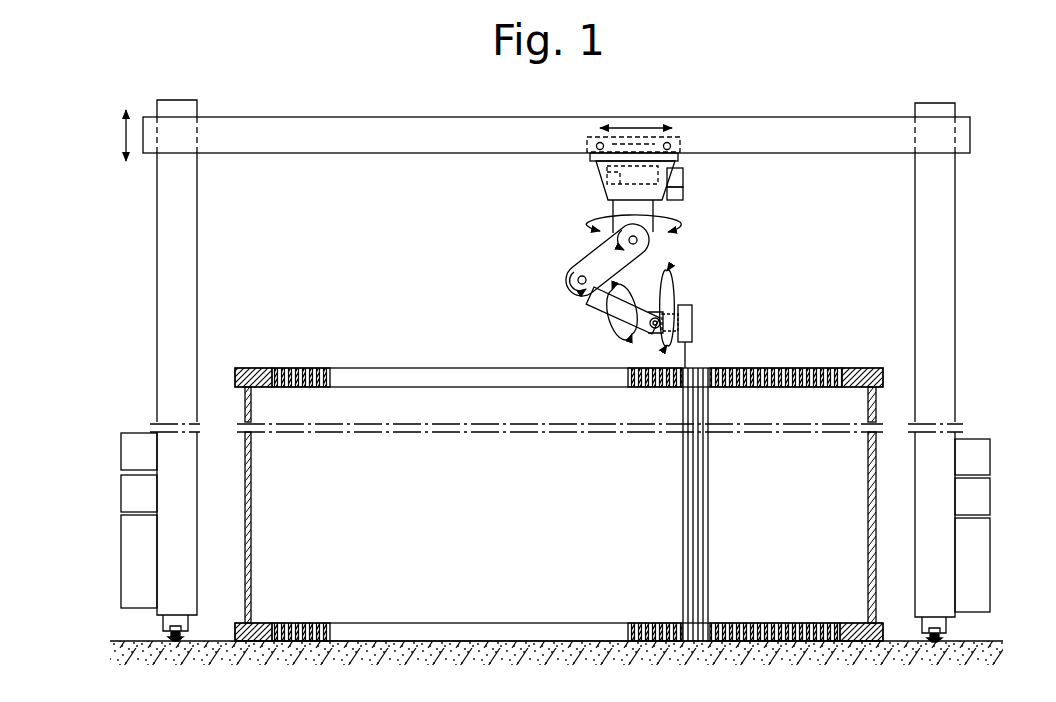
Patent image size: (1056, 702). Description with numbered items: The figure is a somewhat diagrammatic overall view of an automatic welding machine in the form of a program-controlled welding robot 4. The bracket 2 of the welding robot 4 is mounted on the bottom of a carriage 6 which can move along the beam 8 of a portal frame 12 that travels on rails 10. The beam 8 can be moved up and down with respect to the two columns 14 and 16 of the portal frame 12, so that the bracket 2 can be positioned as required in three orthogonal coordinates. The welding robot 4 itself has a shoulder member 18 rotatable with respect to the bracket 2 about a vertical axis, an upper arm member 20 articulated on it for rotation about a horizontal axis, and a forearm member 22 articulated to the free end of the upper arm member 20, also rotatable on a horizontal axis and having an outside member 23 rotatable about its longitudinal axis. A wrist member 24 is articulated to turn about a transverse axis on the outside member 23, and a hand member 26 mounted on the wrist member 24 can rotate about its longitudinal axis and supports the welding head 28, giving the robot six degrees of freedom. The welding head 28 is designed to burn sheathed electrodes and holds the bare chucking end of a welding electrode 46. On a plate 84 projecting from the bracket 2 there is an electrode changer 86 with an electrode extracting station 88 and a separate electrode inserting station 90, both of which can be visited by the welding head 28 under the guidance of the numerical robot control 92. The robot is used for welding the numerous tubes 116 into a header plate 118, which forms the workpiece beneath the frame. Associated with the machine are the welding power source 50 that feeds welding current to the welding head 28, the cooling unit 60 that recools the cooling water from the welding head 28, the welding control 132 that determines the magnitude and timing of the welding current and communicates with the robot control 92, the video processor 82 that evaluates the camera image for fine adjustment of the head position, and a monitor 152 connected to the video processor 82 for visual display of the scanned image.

The bracket 2 is at (608, 186).
The welding robot 4 is at (662, 242).
The carriage 6 is at (606, 140).
The beam 8 is at (354, 117).
The rails 10 is at (173, 640).
The portal frame 12 is at (968, 256).
The column 14 is at (168, 290).
The column 16 is at (947, 310).
The shoulder member 18 is at (620, 210).
The upper arm member 20 is at (593, 260).
The forearm member 22 is at (598, 299).
The outside member 23 is at (618, 317).
The wrist member 24 is at (663, 300).
The hand member 26 is at (693, 325).
The welding head 28 is at (692, 312).
The welding electrode 46 is at (688, 361).
The welding power source 50 is at (985, 570).
The cooling unit 60 is at (985, 462).
The video processor 82 is at (121, 485).
The plate 84 is at (644, 146).
The electrode changer 86 is at (684, 178).
The electrode extracting station 88 is at (684, 195).
The electrode inserting station 90 is at (608, 178).
The numerical robot control 92 is at (121, 550).
The tubes 116 is at (688, 497).
The header plate 118 is at (852, 369).
The welding control 132 is at (985, 500).
The monitor 152 is at (121, 445).